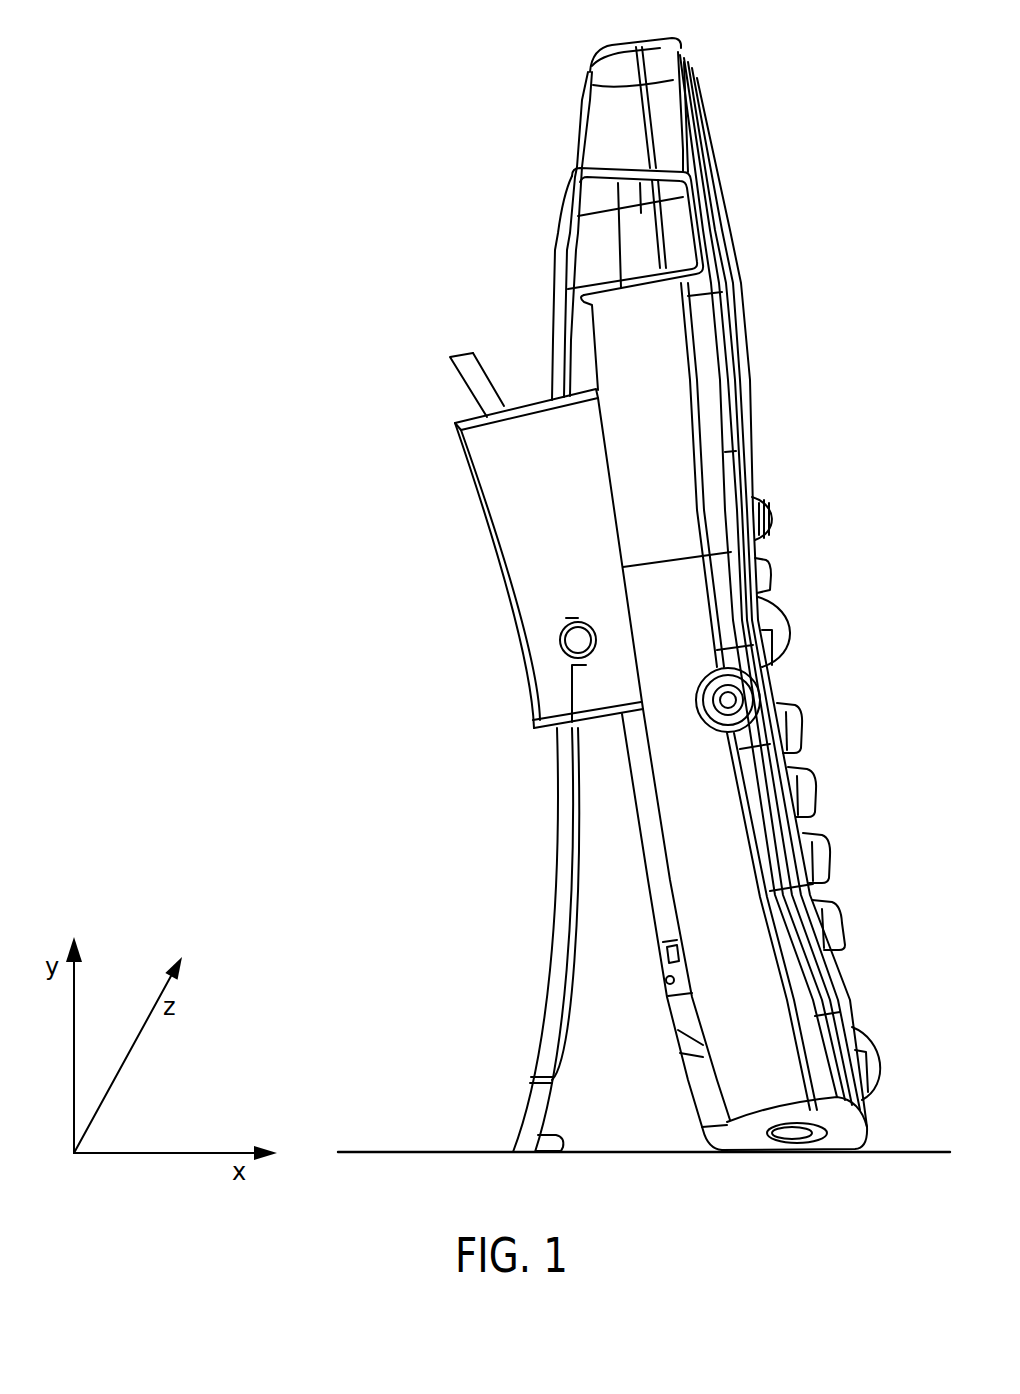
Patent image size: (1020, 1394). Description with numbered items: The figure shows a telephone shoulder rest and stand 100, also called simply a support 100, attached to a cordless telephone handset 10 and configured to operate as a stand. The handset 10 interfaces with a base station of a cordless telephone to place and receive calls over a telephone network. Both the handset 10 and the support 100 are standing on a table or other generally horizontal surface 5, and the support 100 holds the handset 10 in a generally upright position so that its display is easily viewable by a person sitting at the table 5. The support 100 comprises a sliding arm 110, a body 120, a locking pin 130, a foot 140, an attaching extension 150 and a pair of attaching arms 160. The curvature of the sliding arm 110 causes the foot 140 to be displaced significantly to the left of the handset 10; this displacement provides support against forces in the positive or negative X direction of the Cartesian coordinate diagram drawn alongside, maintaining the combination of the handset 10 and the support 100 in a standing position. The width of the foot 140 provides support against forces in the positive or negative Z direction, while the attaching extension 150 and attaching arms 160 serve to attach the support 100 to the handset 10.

The table or other generally horizontal surface 5 is at (400, 1150).
The cordless telephone handset 10 is at (774, 370).
The telephone shoulder rest and stand 100 is at (484, 785).
The sliding arm 110 is at (556, 927).
The body 120 is at (497, 560).
The locking pin 130 is at (563, 660).
The foot 140 is at (555, 1134).
The attaching extension 150 is at (557, 232).
The attaching arms 160 is at (603, 167).